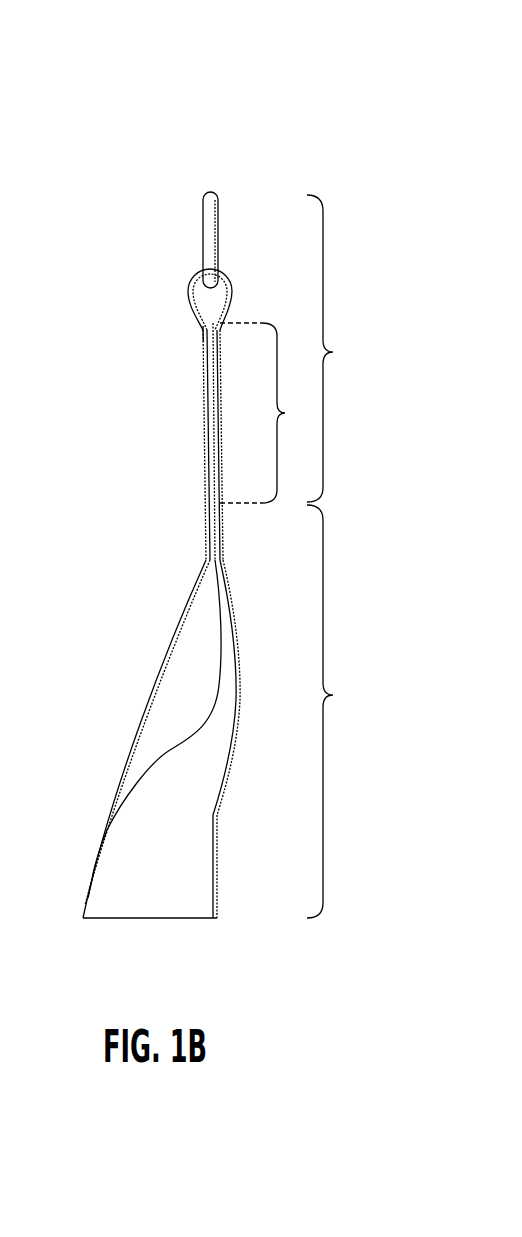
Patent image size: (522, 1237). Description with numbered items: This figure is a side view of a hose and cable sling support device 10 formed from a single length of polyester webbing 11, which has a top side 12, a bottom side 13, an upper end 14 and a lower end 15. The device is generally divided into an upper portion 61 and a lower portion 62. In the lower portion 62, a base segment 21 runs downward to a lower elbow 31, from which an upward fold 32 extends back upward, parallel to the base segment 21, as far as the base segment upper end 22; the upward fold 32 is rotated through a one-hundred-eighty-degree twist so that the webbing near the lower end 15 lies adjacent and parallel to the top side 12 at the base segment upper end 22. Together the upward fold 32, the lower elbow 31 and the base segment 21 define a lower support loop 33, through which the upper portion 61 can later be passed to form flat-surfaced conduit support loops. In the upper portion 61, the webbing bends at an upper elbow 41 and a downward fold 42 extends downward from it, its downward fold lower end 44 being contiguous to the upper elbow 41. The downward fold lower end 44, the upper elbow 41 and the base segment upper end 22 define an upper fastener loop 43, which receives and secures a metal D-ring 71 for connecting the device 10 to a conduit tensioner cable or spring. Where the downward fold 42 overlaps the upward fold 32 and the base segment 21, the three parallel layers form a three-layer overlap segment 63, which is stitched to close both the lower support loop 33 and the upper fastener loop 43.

The hose and cable sling support device 10 is at (313, 61).
The length of polyester webbing 11 is at (143, 592).
The top side 12 is at (182, 690).
The bottom side 13 is at (177, 860).
The upper end 14 is at (202, 506).
The lower end 15 is at (203, 323).
The base segment 21 is at (223, 432).
The base segment upper end 22 is at (234, 310).
The lower elbow 31 is at (163, 924).
The upward fold 32 is at (142, 701).
The lower support loop 33 is at (135, 769).
The upper elbow 41 is at (226, 269).
The downward fold 42 is at (203, 407).
The upper fastener loop 43 is at (204, 298).
The downward fold lower end 44 is at (187, 320).
The upper portion 61 is at (334, 348).
The lower portion 62 is at (335, 711).
The 3-layer overlap segment 63 is at (265, 413).
The metal D-ring 71 is at (203, 200).